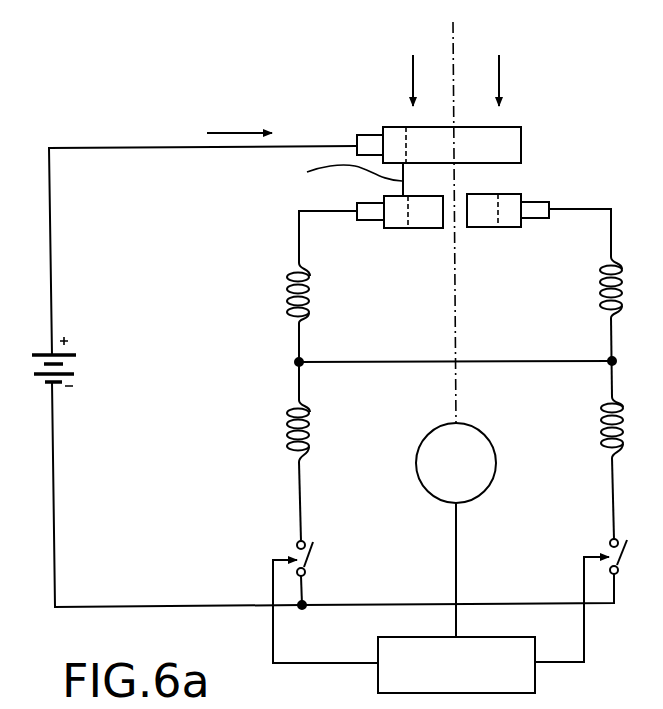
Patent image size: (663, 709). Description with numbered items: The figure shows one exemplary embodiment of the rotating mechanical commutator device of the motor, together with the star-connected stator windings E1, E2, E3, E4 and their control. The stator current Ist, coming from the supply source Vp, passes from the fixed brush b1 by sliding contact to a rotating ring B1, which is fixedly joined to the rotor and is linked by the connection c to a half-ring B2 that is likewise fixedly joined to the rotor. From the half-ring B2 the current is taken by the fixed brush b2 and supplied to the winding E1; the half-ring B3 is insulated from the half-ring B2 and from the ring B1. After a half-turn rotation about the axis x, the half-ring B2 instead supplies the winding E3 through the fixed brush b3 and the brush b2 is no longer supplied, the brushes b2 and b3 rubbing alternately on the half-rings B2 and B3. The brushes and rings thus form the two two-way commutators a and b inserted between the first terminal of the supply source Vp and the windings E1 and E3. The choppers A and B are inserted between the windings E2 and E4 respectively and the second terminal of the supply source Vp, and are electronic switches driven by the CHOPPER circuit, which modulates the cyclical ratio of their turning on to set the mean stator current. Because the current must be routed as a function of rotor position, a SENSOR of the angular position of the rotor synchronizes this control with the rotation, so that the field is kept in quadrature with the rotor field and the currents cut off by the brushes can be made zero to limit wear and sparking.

The rotating ring B1 is at (489, 148).
The fixed brush b1 is at (368, 146).
The half-ring B2 is at (417, 219).
The fixed brush b2 is at (370, 208).
The half-ring B3 is at (494, 212).
The fixed brush b3 is at (537, 208).
The connection c is at (347, 170).
The commutator a is at (412, 69).
The commutator b is at (501, 69).
The axis x is at (463, 216).
The stator current Ist is at (239, 119).
The stator winding E1 is at (316, 293).
The stator winding E2 is at (317, 431).
The stator winding E3 is at (630, 287).
The stator winding E4 is at (631, 427).
The supply source Vp is at (73, 361).
The chopper A is at (315, 573).
The chopper B is at (629, 556).
The sensor SENSOR is at (456, 463).
The chopper circuit CHOPPER is at (441, 625).